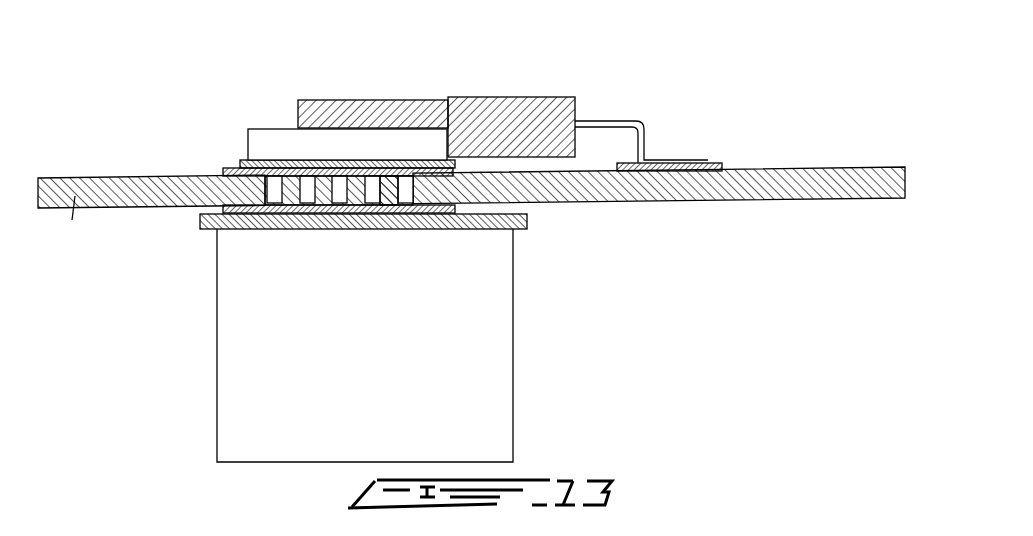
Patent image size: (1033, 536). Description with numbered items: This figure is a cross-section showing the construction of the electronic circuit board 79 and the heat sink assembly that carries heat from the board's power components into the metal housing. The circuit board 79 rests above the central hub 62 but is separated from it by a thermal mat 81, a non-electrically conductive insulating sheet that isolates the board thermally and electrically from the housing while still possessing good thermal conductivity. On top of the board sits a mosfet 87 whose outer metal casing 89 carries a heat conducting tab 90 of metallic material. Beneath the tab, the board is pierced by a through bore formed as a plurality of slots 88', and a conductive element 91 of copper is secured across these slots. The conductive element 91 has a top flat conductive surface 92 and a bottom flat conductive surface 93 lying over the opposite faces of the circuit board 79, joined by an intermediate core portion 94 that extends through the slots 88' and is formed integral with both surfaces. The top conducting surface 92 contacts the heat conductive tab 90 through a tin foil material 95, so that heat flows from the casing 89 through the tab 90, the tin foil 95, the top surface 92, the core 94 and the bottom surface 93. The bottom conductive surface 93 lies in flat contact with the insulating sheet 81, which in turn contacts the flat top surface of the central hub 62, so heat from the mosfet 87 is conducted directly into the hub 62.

The central hub 62 is at (478, 373).
The electronic circuit board 79 is at (770, 167).
The thermal mat 81 is at (200, 216).
The mosfet 87 is at (517, 85).
The slots 88' is at (326, 247).
The outer metal casing 89 is at (385, 112).
The heat conducting tab 90 is at (290, 147).
The conductive element 91 is at (375, 225).
The top flat conductive surface 92 is at (452, 173).
The bottom flat conductive surface 93 is at (455, 229).
The intermediate core portion 94 is at (340, 229).
The tin foil material 95 is at (240, 163).